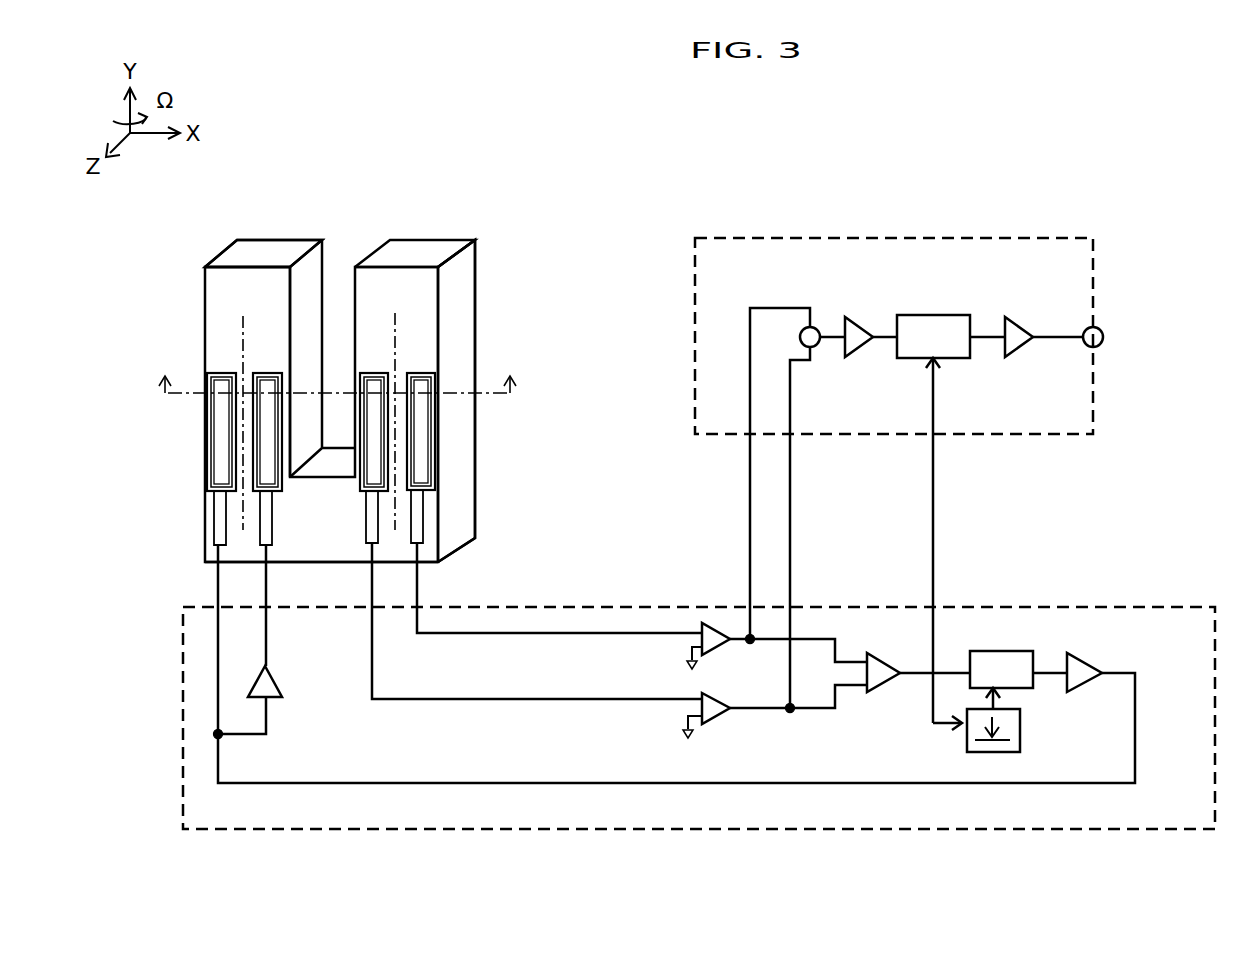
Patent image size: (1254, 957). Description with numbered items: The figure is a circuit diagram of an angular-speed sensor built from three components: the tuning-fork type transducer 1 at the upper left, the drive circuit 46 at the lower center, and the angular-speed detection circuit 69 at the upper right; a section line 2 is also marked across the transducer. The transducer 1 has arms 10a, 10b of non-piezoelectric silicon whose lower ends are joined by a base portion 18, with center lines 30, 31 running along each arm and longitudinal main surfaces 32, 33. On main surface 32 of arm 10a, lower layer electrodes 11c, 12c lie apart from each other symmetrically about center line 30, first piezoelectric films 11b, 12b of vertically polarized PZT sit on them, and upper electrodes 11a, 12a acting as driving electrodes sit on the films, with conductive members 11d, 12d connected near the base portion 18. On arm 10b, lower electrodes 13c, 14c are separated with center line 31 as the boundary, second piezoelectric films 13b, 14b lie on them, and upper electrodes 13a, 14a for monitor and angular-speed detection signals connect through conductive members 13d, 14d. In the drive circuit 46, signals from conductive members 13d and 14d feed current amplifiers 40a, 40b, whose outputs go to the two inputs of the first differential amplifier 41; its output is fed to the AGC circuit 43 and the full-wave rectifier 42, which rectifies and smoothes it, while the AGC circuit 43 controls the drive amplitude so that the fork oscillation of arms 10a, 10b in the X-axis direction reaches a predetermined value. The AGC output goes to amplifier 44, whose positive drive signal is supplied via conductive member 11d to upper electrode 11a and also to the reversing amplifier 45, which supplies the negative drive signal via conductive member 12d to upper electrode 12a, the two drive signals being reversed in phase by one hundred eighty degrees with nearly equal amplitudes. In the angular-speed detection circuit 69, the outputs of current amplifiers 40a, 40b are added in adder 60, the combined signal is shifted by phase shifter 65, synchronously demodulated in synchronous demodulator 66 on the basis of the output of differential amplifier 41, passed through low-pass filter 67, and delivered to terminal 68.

The tuning-fork type transducer 1 is at (350, 150).
The section line 2- 2 is at (336, 391).
The arm 10a is at (212, 262).
The arm 10b is at (468, 263).
The upper electrode 11a is at (218, 468).
The first piezoelectric film 11b is at (218, 378).
The lower layer electrode 11c is at (225, 378).
The conductive member 11d is at (218, 517).
The upper electrode 12a is at (262, 472).
The first piezoelectric film 12b is at (262, 375).
The lower layer electrode 12c is at (268, 373).
The conductive member 12d is at (265, 545).
The upper electrode 13a is at (418, 440).
The second piezoelectric film 13b is at (428, 378).
The lower electrode 13c is at (418, 372).
The conductive member 13d is at (415, 520).
The upper electrode 14a is at (372, 455).
The second piezoelectric film 14b is at (367, 372).
The lower electrode 14c is at (380, 373).
The conductive member 14d is at (385, 543).
The base portion 18 is at (322, 548).
The center line 30 is at (246, 316).
The center line 31 is at (396, 313).
The main surface 32 is at (242, 277).
The main surface 33 is at (423, 315).
The current amplifier 40a is at (717, 628).
The current amplifier 40b is at (715, 722).
The first differential amplifier 41 is at (887, 685).
The full-wave rectifier 42 is at (983, 752).
The AGC circuit 43 is at (1030, 688).
The amplifier 44 is at (1082, 683).
The reversing amplifier 45 is at (275, 697).
The drive circuit 46 is at (1152, 607).
The adder 60 is at (815, 347).
The phase shifter 65 is at (855, 353).
The synchronous demodulator 66 is at (952, 358).
The low-pass filter 67 is at (1013, 355).
The terminal 68 is at (1098, 347).
The angular-speed detection circuit 69 is at (695, 358).